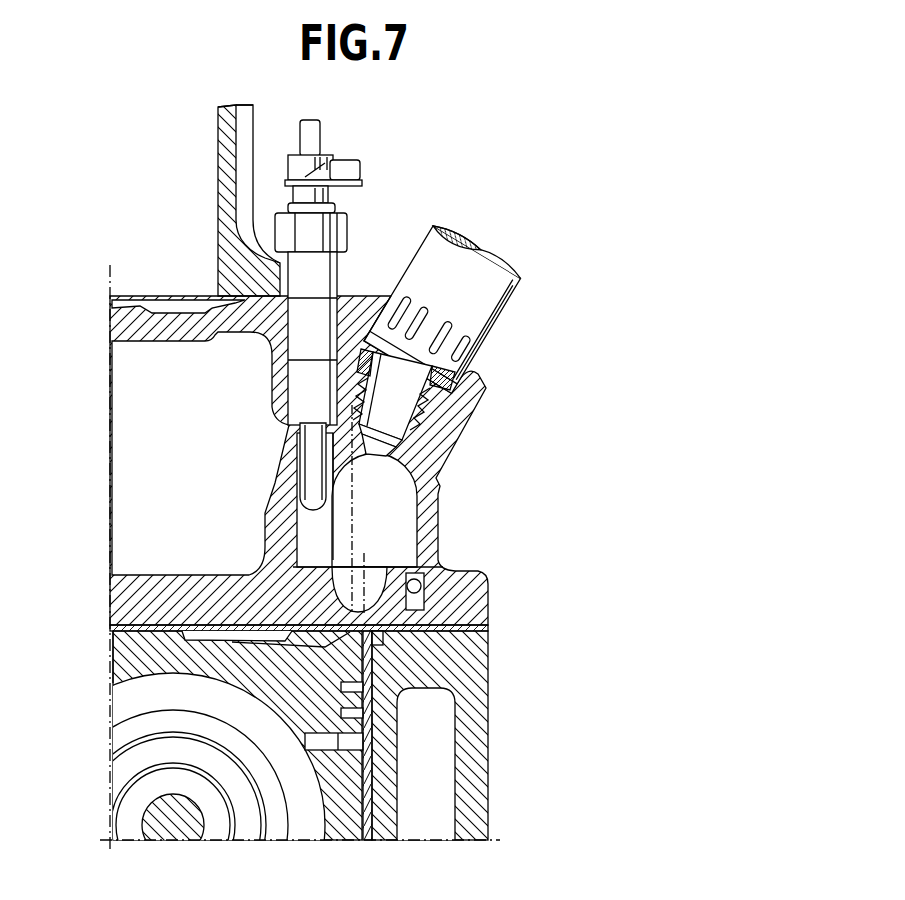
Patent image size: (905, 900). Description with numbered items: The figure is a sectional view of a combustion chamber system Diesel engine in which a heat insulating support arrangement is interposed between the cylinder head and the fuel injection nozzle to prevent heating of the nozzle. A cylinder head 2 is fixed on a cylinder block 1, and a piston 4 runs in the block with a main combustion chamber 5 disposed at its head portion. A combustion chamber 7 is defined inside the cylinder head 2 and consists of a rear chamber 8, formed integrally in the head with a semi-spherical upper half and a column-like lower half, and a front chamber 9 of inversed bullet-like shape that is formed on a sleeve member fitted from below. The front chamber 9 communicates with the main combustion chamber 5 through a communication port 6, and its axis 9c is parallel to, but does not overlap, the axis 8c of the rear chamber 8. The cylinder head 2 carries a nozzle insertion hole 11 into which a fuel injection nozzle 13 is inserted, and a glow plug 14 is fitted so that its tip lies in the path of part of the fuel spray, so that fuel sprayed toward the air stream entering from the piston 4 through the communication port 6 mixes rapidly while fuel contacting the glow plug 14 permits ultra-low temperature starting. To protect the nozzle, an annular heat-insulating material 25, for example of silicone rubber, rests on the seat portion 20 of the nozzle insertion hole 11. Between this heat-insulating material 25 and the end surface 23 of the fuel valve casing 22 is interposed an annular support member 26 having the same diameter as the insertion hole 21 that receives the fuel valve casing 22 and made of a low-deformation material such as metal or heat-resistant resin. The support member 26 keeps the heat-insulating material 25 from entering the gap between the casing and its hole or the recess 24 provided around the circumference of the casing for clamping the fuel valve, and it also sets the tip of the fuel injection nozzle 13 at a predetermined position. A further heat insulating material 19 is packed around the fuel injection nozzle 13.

The cylinder block 1 is at (488, 773).
The cylinder head 2 is at (488, 605).
The piston 4 is at (130, 650).
The main combustion chamber 5 is at (488, 690).
The communication port 6 is at (488, 655).
The combustion chamber 7 is at (438, 528).
The rear chamber 8 is at (407, 498).
The axis of rear chamber 8c is at (353, 527).
The front chamber 9 is at (445, 567).
The axis of front chamber 9c is at (345, 562).
The nozzle insertion hole 11 is at (383, 453).
The fuel injection nozzle 13 is at (390, 410).
The glow plug 14 is at (307, 457).
The heat insulating material 19 is at (430, 388).
The seat portion 20 is at (297, 388).
The insertion hole 21 is at (379, 293).
The fuel valve casing 22 is at (500, 315).
The end surface 23 is at (480, 248).
The recess 24 is at (428, 312).
The heat-insulating material 25 is at (430, 380).
The support member 26 is at (452, 375).